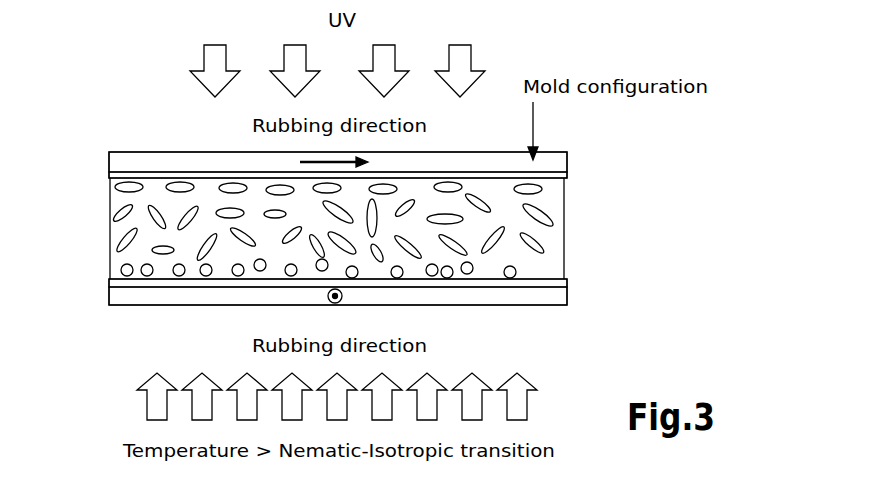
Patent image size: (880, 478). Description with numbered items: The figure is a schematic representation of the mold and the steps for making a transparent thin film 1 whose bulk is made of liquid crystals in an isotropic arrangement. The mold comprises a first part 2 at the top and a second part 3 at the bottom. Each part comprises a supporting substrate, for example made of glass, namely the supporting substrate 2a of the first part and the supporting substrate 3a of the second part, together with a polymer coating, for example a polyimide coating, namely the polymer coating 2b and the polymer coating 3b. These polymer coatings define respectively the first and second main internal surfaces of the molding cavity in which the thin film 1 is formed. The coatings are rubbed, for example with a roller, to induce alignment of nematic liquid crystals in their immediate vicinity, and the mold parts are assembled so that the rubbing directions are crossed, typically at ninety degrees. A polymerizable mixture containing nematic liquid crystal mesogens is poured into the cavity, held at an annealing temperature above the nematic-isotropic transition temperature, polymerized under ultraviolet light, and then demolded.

The thin film 1 is at (587, 218).
The first part 2 is at (592, 162).
The supporting substrate 2a is at (142, 158).
The polymer coating 2b is at (110, 176).
The second part 3 is at (584, 293).
The supporting substrate 3a is at (118, 297).
The polymer coating 3b is at (117, 281).